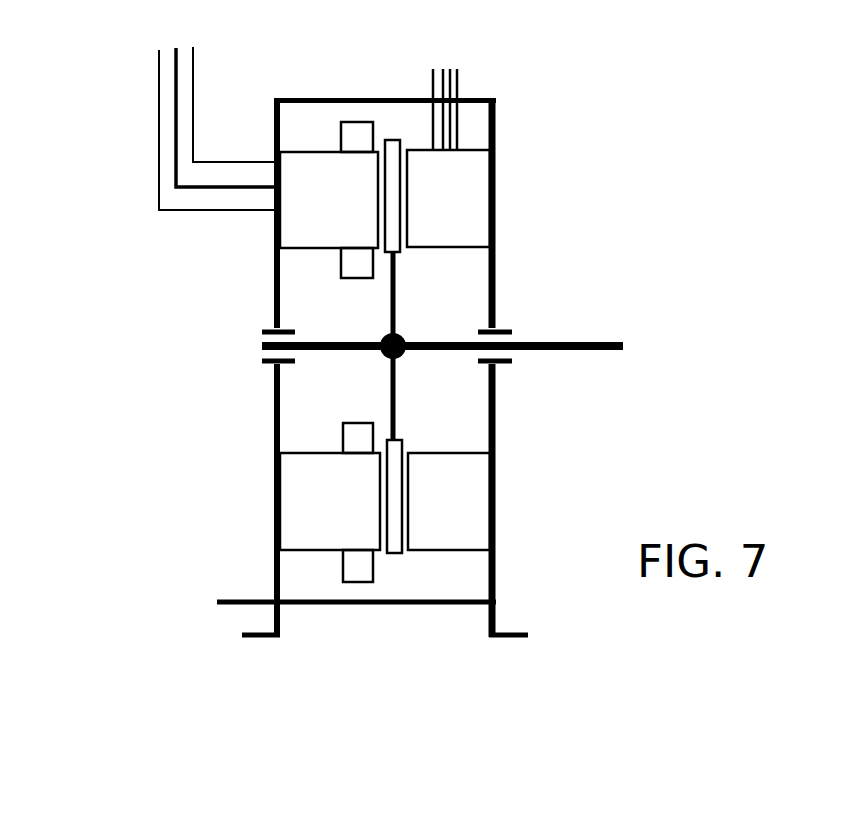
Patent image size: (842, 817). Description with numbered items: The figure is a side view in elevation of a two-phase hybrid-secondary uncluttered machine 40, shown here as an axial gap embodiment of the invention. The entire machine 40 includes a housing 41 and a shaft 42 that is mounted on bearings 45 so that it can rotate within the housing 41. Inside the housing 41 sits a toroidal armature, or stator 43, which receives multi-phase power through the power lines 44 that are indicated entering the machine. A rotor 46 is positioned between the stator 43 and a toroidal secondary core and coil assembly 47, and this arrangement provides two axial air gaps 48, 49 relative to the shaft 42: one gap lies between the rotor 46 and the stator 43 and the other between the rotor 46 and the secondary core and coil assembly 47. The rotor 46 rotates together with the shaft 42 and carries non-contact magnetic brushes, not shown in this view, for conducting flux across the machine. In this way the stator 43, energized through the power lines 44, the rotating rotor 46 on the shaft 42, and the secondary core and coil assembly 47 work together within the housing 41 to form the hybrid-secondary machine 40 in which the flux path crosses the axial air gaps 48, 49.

The machine 40 is at (512, 117).
The housing 41 is at (495, 547).
The shaft 42 is at (580, 353).
The toroidal armature (stator) 43 is at (310, 387).
The power lines 44 is at (162, 77).
The bearings 45 is at (270, 364).
The rotor 46 is at (400, 553).
The toroidal secondary core and coil assembly 47 is at (445, 378).
The axial air gap 48 is at (382, 550).
The axial air gap 49 is at (406, 538).